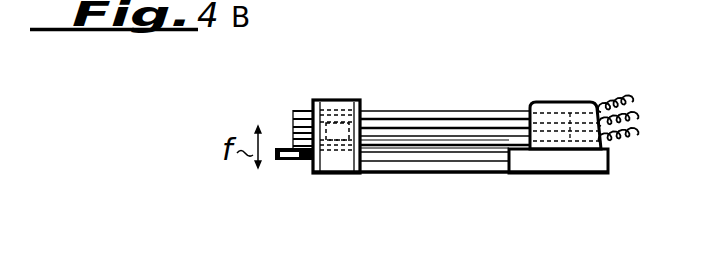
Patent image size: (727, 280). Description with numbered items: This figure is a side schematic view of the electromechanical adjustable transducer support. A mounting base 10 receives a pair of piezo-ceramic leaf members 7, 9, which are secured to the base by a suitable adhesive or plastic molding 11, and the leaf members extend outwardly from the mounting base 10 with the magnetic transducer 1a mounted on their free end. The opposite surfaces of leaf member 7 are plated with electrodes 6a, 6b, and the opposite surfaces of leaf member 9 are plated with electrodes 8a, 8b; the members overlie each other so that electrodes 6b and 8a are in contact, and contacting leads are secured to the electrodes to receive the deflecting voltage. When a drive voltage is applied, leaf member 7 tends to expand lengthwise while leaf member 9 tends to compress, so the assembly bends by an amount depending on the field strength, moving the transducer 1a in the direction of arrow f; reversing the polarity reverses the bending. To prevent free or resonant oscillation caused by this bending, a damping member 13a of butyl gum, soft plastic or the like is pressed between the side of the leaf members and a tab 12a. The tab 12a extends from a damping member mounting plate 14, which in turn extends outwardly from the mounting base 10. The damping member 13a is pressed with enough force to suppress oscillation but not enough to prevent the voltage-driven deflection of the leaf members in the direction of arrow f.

The magnetic transducer 1a is at (293, 162).
The electrode 6a is at (412, 121).
The electrode 6b is at (377, 112).
The leaf member 7 is at (462, 112).
The electrode 8a is at (383, 140).
The electrode 8b is at (427, 152).
The leaf member 9 is at (465, 140).
The mounting base 10 is at (575, 165).
The adhesive or plastic molding 11 is at (572, 102).
The tab 12a is at (332, 100).
The damping member 13a is at (345, 142).
The damping member mounting plate 14 is at (497, 172).